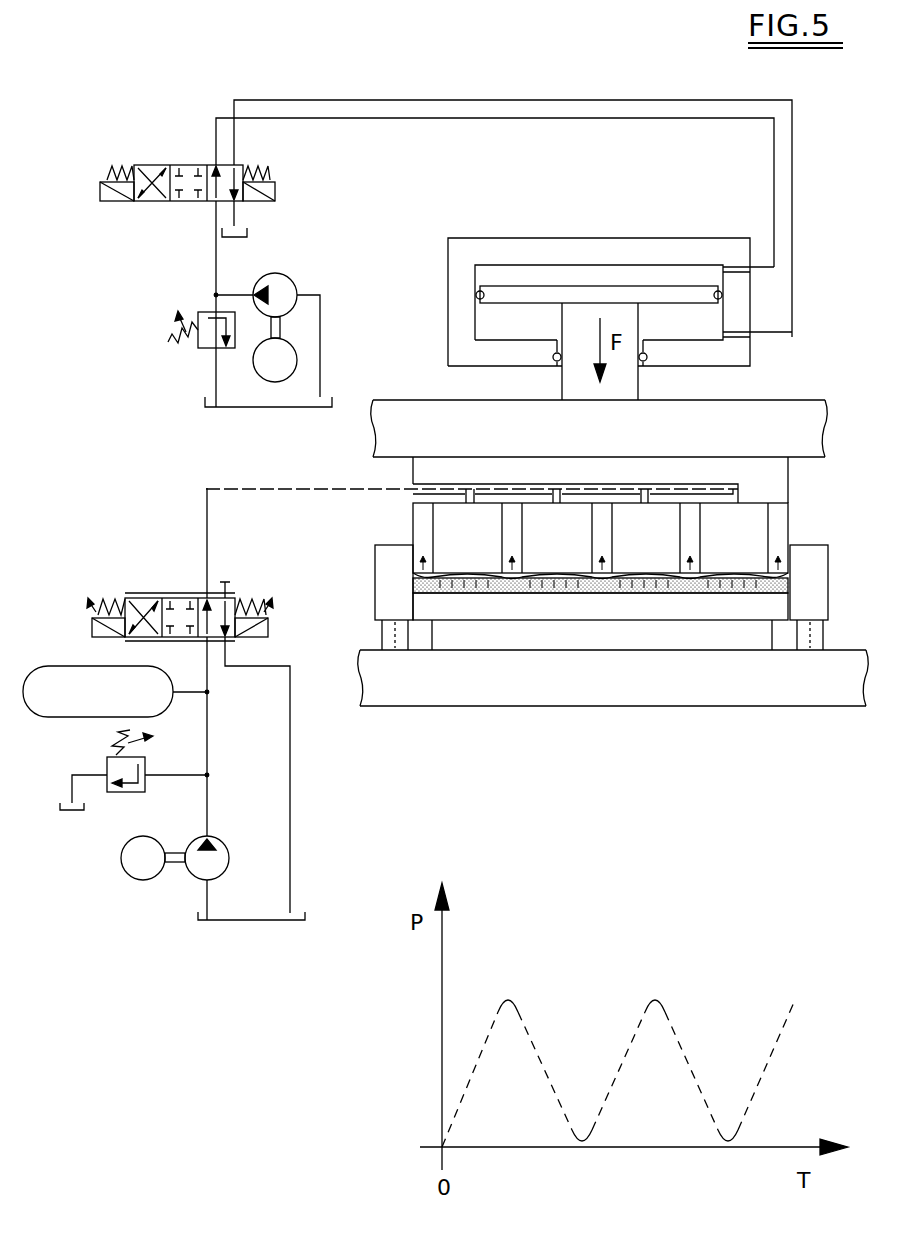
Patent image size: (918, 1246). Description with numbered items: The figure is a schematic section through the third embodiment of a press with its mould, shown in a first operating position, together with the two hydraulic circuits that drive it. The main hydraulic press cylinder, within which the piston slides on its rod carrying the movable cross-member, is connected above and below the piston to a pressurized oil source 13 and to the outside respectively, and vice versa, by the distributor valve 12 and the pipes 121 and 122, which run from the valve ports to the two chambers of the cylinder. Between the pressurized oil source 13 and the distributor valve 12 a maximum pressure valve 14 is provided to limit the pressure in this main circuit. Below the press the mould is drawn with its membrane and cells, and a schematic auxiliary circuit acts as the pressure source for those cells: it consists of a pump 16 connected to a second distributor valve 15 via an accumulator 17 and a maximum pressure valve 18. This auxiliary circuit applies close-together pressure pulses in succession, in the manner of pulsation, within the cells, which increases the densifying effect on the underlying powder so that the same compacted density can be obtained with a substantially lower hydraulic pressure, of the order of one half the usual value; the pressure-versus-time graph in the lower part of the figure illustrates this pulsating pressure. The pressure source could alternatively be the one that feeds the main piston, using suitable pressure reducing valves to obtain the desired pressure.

The distributor valve 12 is at (188, 201).
The pressurized oil source 13 is at (287, 275).
The maximum pressure valve 14 is at (203, 349).
The distributor valve 15 is at (253, 602).
The pump 16 is at (230, 855).
The accumulator 17 is at (102, 687).
The maximum pressure valve 18 is at (125, 792).
The pipe 121 is at (360, 100).
The pipe 122 is at (409, 118).